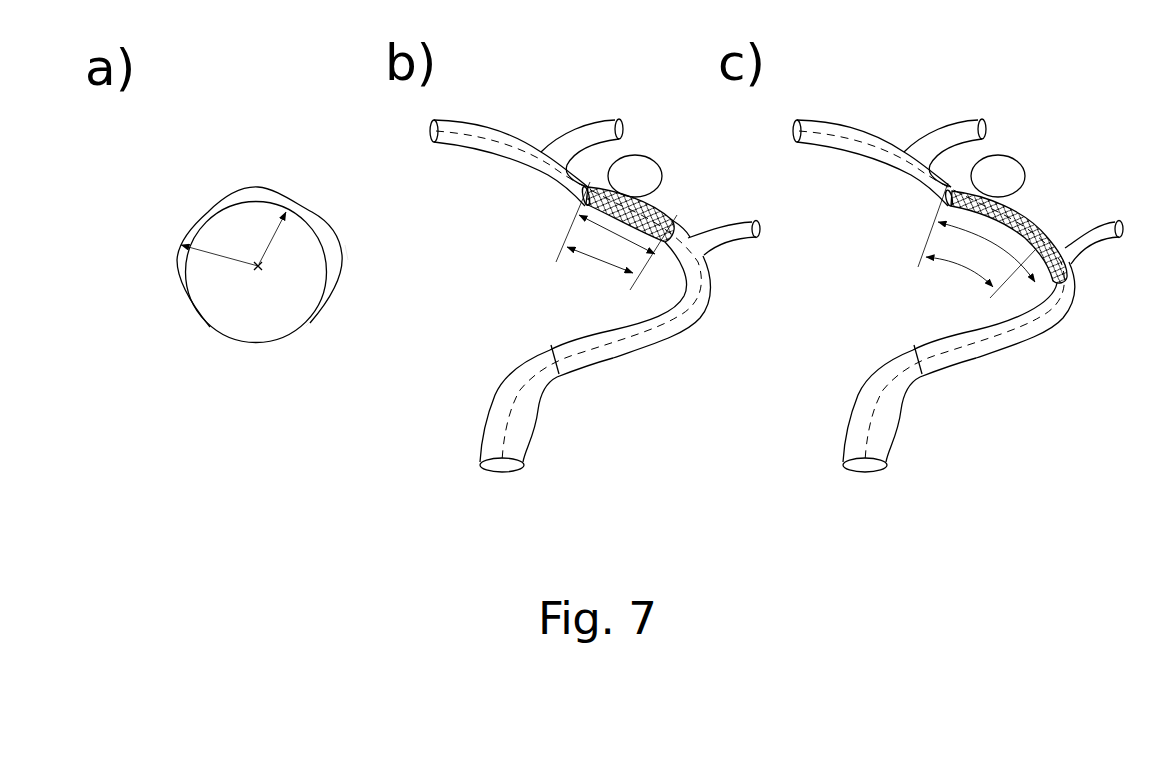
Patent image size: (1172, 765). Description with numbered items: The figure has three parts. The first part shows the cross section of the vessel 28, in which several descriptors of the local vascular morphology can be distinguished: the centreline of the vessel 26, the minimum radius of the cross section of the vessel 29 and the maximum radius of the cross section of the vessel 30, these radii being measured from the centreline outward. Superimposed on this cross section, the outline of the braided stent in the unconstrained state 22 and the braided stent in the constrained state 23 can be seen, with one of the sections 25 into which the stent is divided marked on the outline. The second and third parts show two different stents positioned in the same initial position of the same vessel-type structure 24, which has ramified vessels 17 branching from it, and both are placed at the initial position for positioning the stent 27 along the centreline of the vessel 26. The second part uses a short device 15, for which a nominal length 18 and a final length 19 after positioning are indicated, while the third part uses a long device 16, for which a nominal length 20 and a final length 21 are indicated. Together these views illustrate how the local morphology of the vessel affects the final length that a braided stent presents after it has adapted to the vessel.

The short device 15 is at (665, 201).
The long device 16 is at (1043, 222).
The ramified vessels 17 is at (730, 252).
The nominal length 18 is at (596, 265).
The final length 19 is at (607, 237).
The nominal length 20 is at (960, 272).
The final length 21 is at (977, 240).
The braided stent in the unconstrained state 22 is at (233, 342).
The braided stent in the constrained state 23 is at (315, 325).
The vessel-type structure 24 is at (647, 357).
The sections 25 is at (347, 268).
The centreline of the vessel 26 is at (255, 263).
The initial position for positioning the stent 27 is at (575, 194).
The cross section of the vessel 28 is at (549, 345).
The minimum radius of the cross section of the vessel 29 is at (282, 236).
The maximum radius of the cross section of the vessel 30 is at (212, 261).